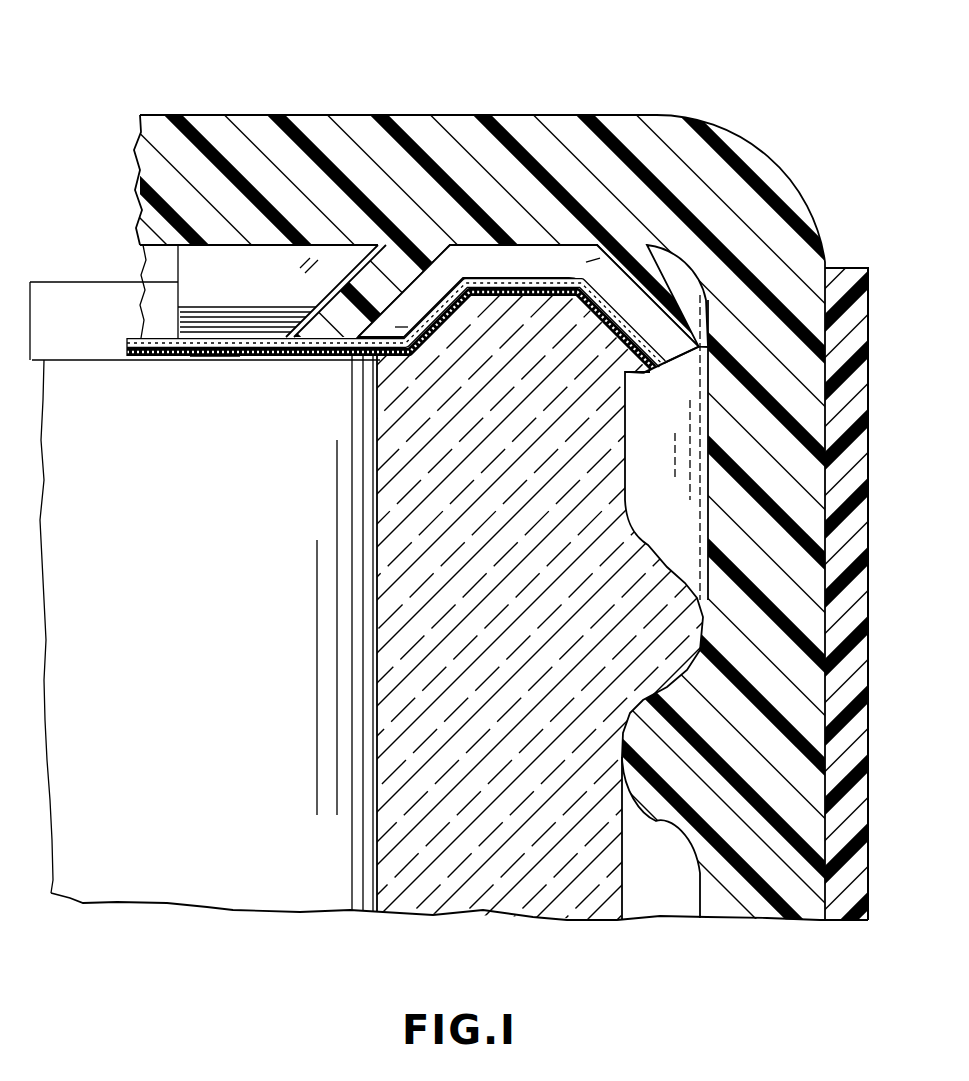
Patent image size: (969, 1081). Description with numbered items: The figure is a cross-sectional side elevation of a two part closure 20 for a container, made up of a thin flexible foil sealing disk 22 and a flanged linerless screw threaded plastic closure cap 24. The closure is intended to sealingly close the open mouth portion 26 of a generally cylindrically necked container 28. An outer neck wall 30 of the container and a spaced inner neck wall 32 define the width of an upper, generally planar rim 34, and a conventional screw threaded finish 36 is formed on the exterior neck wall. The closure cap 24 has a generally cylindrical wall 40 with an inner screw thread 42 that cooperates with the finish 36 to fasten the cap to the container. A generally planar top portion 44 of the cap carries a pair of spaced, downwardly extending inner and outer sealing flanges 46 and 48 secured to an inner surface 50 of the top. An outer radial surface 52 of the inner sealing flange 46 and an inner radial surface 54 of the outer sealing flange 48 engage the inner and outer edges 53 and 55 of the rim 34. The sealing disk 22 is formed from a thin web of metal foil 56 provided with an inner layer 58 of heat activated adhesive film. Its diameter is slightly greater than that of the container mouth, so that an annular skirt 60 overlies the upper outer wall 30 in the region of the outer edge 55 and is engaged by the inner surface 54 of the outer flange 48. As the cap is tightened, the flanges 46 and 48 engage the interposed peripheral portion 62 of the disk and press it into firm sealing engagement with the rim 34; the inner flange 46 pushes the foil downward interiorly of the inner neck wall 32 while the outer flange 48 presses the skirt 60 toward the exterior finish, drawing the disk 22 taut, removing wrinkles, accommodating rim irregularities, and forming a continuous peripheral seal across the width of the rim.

The two part closure 20 is at (127, 92).
The flexible foil sealing disk 22 is at (143, 358).
The closure cap 24 is at (117, 223).
The open mouth portion 26 is at (95, 411).
The container 28 is at (117, 888).
The outer neck wall 30 is at (628, 502).
The inner neck wall 32 is at (377, 472).
The rim 34 is at (398, 312).
The screw threaded finish 36 is at (663, 585).
The cylindrical wall 40 is at (812, 583).
The inner screw thread 42 is at (658, 822).
The top portion 44 is at (270, 152).
The inner sealing flange 46 is at (318, 272).
The outer sealing flange 48 is at (658, 322).
The inner surface 50 is at (141, 252).
The outer radial surface 52 is at (432, 283).
The inner edge 53 is at (398, 360).
The inner radial surface 54 is at (600, 262).
The outer edge 55 is at (590, 298).
The metal foil 56 is at (160, 336).
The inner layer of heat activated adhesive film 58 is at (214, 355).
The annular skirt 60 is at (636, 375).
The peripheral portion 62 is at (497, 284).